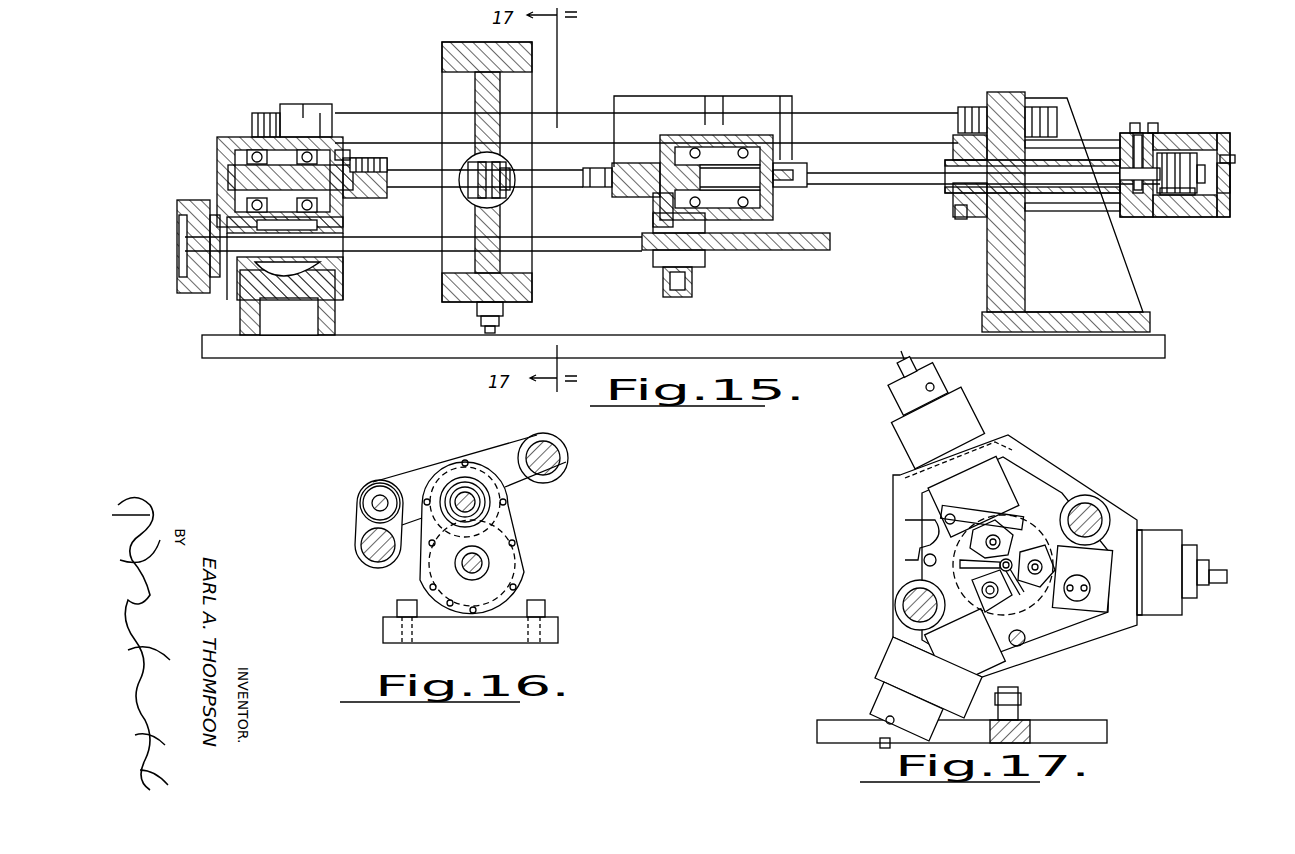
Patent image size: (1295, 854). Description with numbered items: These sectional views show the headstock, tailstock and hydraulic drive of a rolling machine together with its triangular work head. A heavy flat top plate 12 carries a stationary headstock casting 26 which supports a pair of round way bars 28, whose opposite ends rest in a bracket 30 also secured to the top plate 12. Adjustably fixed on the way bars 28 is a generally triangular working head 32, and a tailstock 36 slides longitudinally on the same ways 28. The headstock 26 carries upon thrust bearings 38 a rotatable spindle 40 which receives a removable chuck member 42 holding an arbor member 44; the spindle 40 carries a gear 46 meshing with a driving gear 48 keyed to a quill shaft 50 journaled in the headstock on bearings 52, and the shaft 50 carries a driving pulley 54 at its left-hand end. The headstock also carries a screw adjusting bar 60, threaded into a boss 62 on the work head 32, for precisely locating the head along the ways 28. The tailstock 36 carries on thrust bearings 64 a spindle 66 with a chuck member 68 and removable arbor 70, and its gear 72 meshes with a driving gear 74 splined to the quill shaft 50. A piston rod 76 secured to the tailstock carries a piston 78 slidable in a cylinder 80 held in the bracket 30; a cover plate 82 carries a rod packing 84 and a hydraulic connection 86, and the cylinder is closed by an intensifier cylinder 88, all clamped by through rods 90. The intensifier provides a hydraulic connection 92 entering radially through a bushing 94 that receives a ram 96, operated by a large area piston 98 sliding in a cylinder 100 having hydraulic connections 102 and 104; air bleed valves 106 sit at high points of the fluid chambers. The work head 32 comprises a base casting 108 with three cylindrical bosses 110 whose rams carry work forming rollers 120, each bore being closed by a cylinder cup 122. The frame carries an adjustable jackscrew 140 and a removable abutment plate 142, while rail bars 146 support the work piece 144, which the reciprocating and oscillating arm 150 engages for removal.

In FIG. 15, the top plate 12 is at (800, 337).
In FIG. 16, the top plate 12 is at (558, 629).
In FIG. 17, the top plate 12 is at (1010, 720).
In FIG. 15, the headstock casting 26 is at (261, 302).
In FIG. 16, the headstock casting 26 is at (520, 595).
In FIG. 15, the way bars 28 is at (890, 113).
In FIG. 16, the way bars 28 is at (368, 540).
In FIG. 17, the way bars 28 is at (1090, 515).
In FIG. 15, the bracket 30 is at (986, 250).
In FIG. 15, the working head 32 is at (441, 58).
In FIG. 17, the working head 32 is at (1068, 463).
In FIG. 15, the tailstock 36 is at (735, 98).
In FIG. 15, the thrust bearings 38 is at (318, 136).
In FIG. 15, the spindle 40 is at (350, 156).
In FIG. 15, the chuck member 42 is at (360, 190).
In FIG. 15, the arbor member 44 is at (417, 170).
In FIG. 16, the arbor member 44 is at (470, 503).
In FIG. 15, the gear 46 is at (335, 212).
In FIG. 15, the driving gear 48 is at (343, 272).
In FIG. 15, the quill shaft 50 is at (388, 251).
In FIG. 16, the quill shaft 50 is at (480, 563).
In FIG. 17, the quill shaft 50 is at (1020, 630).
In FIG. 15, the bearings 52 is at (280, 300).
In FIG. 15, the driving pulley 54 is at (192, 205).
In FIG. 16, the screw adjusting bar 60 is at (378, 503).
In FIG. 17, the screw adjusting bar 60 is at (924, 560).
In FIG. 17, the boss 62 is at (905, 522).
In FIG. 15, the thrust bearings 64 is at (694, 148).
In FIG. 15, the spindle 66 is at (658, 163).
In FIG. 15, the chuck member 68 is at (628, 197).
In FIG. 15, the arbor 70 is at (565, 175).
In FIG. 15, the gear 72 is at (655, 210).
In FIG. 15, the driving gear 74 is at (660, 276).
In FIG. 15, the piston rod 76 is at (866, 186).
In FIG. 15, the piston 78 is at (1035, 170).
In FIG. 15, the cylinder 80 is at (1055, 194).
In FIG. 15, the cover plate 82 is at (953, 158).
In FIG. 15, the rod packing 84 is at (953, 192).
In FIG. 15, the hydraulic connection 86 is at (962, 220).
In FIG. 15, the intensifier cylinder 88 is at (1195, 134).
In FIG. 15, the through rods 90 is at (1088, 141).
In FIG. 15, the hydraulic connection 92 is at (1135, 218).
In FIG. 15, the bushing 94 is at (1143, 135).
In FIG. 15, the ram 96 is at (1118, 174).
In FIG. 15, the large area piston 98 is at (1195, 205).
In FIG. 15, the cylinder 100 is at (1232, 180).
In FIG. 15, the hydraulic connection 102 is at (1172, 216).
In FIG. 15, the hydraulic connection 104 is at (1232, 195).
In FIG. 15, the air bleed valves 106 is at (962, 107).
In FIG. 17, the base casting 108 is at (1108, 625).
In FIG. 17, the cylindrical bosses 110 is at (984, 497).
In FIG. 15, the work forming roller 120 is at (500, 162).
In FIG. 17, the cylinder cup 122 is at (960, 407).
In FIG. 17, the jackscrew 140 is at (1025, 708).
In FIG. 17, the abutment plate 142 is at (1077, 601).
In FIG. 15, the work piece 144 is at (516, 190).
In FIG. 17, the work piece 144 is at (1022, 540).
In FIG. 17, the rail bars 146 is at (981, 602).
In FIG. 17, the arm 150 is at (962, 512).